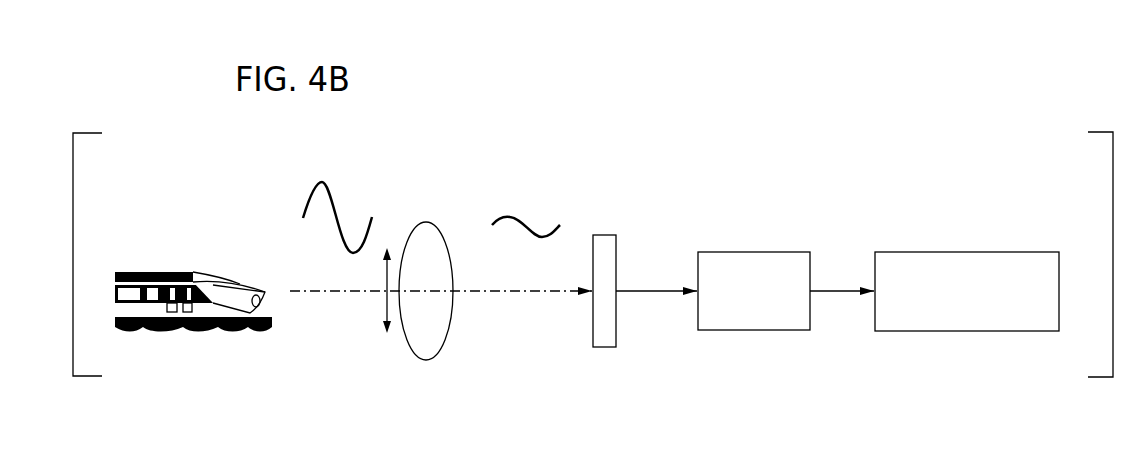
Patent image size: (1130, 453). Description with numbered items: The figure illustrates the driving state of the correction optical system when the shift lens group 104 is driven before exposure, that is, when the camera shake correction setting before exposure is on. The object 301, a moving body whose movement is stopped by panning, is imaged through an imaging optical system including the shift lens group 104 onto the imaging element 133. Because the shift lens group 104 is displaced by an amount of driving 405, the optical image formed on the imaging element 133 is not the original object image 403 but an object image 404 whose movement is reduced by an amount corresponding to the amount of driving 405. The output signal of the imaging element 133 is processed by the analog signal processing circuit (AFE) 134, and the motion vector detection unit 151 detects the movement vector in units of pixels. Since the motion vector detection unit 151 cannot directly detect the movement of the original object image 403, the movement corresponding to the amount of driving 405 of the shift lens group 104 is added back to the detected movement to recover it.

The object 301 is at (192, 267).
The original object image 403 is at (333, 190).
The shift lens group 104 is at (423, 222).
The object image 404 is at (505, 213).
The amount of driving 405 is at (382, 310).
The imaging element 133 is at (607, 233).
The analog signal processing circuit (AFE) 134 is at (775, 250).
The motion vector detection unit 151 is at (1028, 252).